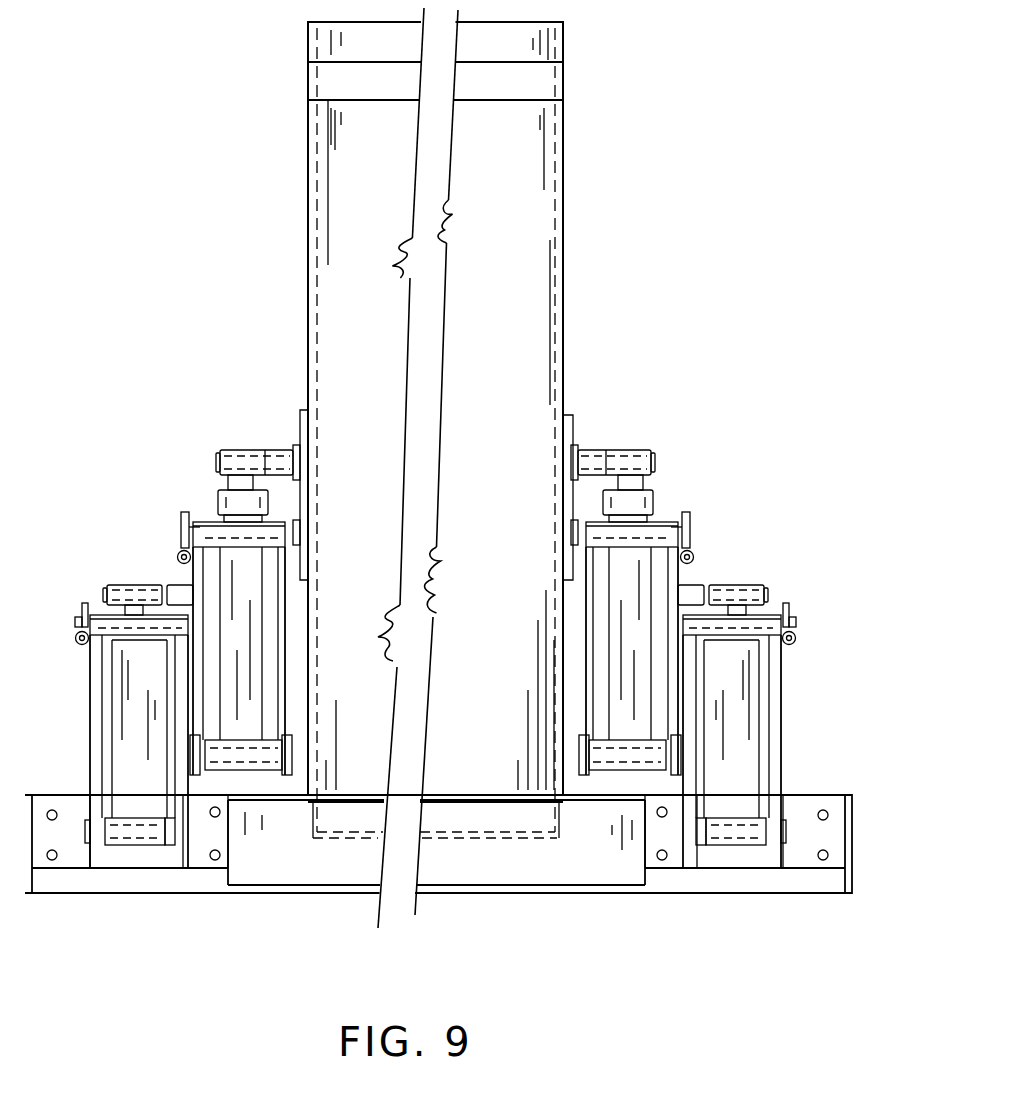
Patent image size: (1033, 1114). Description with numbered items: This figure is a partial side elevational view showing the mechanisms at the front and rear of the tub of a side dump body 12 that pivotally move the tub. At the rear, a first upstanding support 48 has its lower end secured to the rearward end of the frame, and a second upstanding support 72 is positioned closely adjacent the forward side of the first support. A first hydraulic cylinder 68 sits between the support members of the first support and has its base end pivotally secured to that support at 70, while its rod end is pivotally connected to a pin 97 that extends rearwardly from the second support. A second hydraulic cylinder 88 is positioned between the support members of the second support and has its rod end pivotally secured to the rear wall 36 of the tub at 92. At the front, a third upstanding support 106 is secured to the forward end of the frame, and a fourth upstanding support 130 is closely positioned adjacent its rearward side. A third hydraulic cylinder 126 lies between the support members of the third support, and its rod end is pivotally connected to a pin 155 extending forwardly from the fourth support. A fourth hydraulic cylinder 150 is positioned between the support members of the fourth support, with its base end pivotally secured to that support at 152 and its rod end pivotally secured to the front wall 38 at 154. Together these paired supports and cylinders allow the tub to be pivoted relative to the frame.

The side dump body 12 is at (612, 152).
The rear wall 36 is at (565, 323).
The front wall 38 is at (308, 284).
The first upstanding support 48 is at (790, 742).
The first hydraulic cylinder 68 is at (745, 683).
The pivotal base connection of first hydraulic cylinder 70 is at (778, 837).
The second upstanding support 72 is at (705, 570).
The second hydraulic cylinder 88 is at (630, 568).
The pivotal rod-end connection to back wall 92 is at (657, 462).
The pin 97 is at (773, 593).
The third upstanding support 106 is at (80, 760).
The third hydraulic cylinder 126 is at (133, 693).
The fourth upstanding support 130 is at (180, 572).
The fourth hydraulic cylinder 150 is at (248, 645).
The pivotal base connection of fourth hydraulic cylinder 152 is at (187, 763).
The pivotal rod-end connection to front wall 154 is at (218, 462).
The pin 155 is at (105, 595).